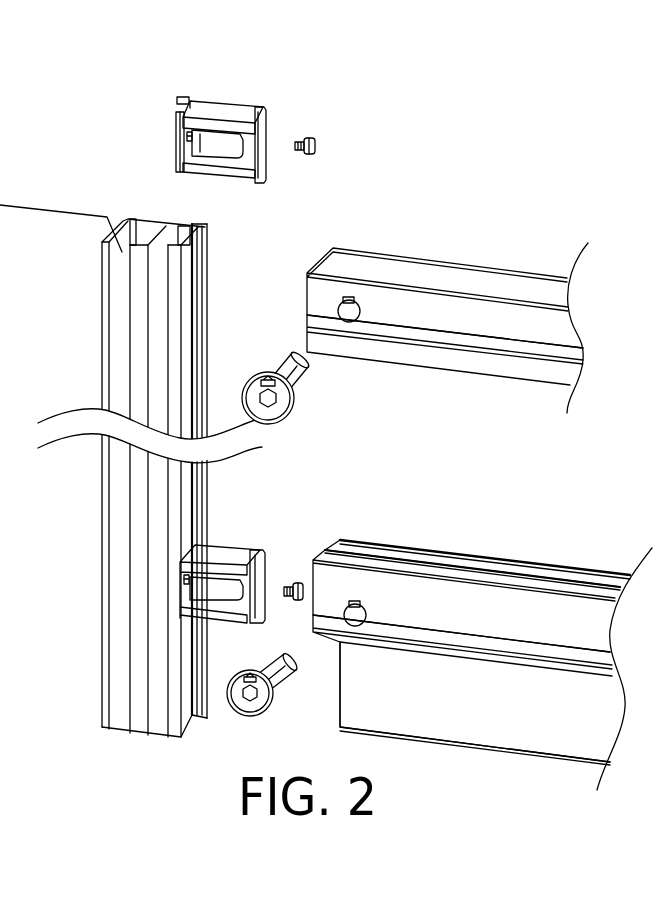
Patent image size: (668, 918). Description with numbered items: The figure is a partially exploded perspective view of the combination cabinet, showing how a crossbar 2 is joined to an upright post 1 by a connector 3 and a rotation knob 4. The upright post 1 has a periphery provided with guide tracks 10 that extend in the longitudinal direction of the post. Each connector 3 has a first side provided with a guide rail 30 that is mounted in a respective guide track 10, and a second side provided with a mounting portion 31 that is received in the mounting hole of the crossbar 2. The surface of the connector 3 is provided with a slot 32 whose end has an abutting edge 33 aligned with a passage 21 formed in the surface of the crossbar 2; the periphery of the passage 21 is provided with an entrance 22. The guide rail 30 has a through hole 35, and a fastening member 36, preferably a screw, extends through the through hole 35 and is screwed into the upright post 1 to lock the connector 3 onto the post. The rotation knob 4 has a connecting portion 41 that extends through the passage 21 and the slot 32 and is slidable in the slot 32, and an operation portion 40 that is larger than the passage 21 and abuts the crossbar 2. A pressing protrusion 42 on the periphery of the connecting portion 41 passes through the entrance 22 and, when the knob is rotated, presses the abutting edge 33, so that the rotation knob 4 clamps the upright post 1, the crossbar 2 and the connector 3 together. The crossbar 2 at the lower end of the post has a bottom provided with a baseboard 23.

The upright post 1 is at (145, 463).
The guide track 10 is at (187, 226).
The crossbar 2 is at (485, 282).
The passage 21 is at (362, 314).
The entrance 22 is at (357, 296).
The baseboard 23 is at (515, 713).
The connector 3 is at (193, 342).
The guide rail 30 is at (176, 139).
The mounting portion 31 is at (220, 174).
The slot 32 is at (212, 143).
The abutting edge 33 is at (242, 143).
The through hole 35 is at (183, 577).
The fastening member 36 is at (317, 141).
The rotation knob 4 is at (299, 544).
The operation portion 40 is at (280, 410).
The connecting portion 41 is at (297, 380).
The pressing protrusion 42 is at (288, 363).